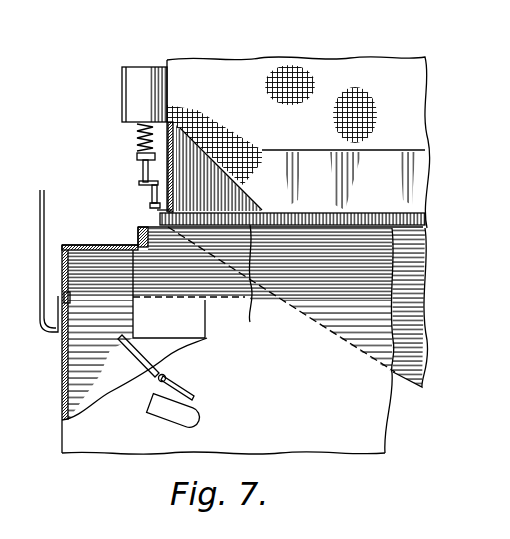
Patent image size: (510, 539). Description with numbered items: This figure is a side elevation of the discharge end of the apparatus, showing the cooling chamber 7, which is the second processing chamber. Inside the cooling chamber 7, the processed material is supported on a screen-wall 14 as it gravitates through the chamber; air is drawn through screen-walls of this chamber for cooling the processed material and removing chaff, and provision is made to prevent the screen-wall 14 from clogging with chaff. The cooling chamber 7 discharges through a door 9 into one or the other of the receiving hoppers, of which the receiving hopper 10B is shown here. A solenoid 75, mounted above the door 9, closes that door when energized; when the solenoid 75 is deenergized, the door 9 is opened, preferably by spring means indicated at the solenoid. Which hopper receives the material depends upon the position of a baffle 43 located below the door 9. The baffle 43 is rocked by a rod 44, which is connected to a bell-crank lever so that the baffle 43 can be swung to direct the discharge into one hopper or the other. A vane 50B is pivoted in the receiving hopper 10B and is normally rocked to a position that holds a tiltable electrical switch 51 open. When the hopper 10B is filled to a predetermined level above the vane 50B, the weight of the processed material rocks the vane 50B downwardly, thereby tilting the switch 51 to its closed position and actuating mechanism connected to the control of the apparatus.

The cooling chamber 7 is at (382, 72).
The solenoid 75 is at (137, 75).
The screen-wall 14 is at (197, 155).
The door 9 is at (160, 213).
The baffle 43 is at (170, 322).
The receiving hopper 10B is at (62, 388).
The rod 44 is at (40, 240).
The vane 50B is at (128, 348).
The tiltable electrical switch 51 is at (200, 404).